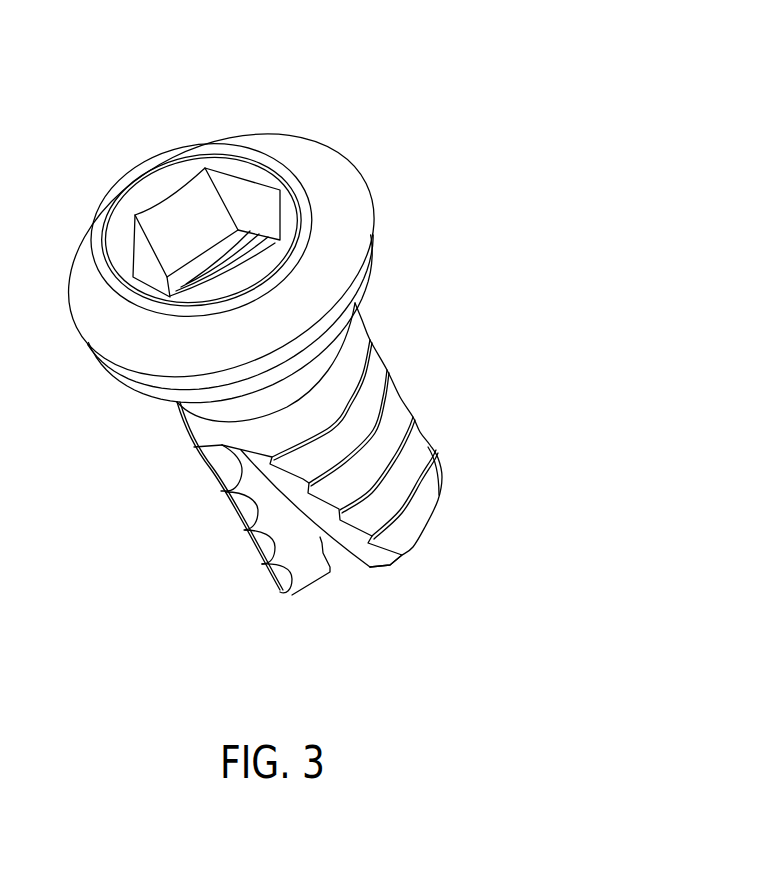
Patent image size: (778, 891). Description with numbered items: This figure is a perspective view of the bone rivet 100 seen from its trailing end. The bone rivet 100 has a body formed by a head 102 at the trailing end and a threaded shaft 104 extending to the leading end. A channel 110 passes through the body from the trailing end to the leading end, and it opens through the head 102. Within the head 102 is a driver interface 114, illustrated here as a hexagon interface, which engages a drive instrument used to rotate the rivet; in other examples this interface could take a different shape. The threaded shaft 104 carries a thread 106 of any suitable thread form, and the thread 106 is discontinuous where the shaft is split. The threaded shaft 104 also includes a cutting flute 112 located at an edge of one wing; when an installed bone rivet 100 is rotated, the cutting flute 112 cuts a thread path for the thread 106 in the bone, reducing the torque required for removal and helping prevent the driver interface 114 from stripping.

The bone rivet 100 is at (278, 368).
The head 102 is at (225, 256).
The threaded shaft 104 is at (437, 375).
The thread 106 is at (232, 507).
The channel 110 is at (193, 228).
The cutting flute 112 is at (309, 572).
The driver interface 114 is at (145, 258).